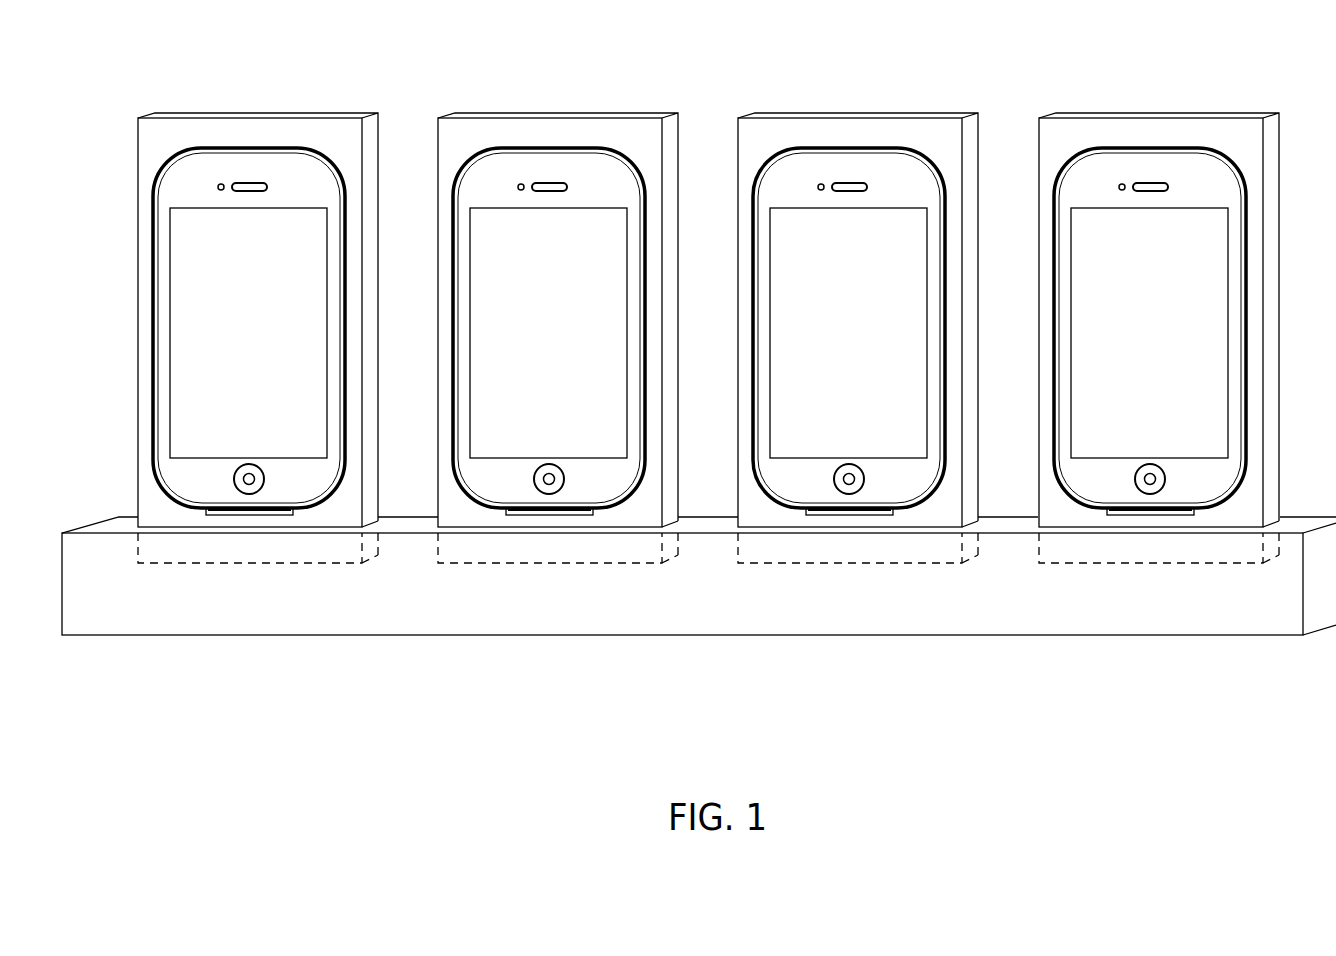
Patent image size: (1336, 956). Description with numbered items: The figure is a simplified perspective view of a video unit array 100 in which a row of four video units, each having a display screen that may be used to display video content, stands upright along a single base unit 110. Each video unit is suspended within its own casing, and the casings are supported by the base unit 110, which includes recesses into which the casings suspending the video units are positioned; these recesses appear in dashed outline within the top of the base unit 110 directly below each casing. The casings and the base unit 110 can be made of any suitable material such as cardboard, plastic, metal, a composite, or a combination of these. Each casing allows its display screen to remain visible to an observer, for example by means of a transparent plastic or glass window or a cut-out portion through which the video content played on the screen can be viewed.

The video unit array 100 is at (1223, 711).
The base unit 110 is at (560, 620).